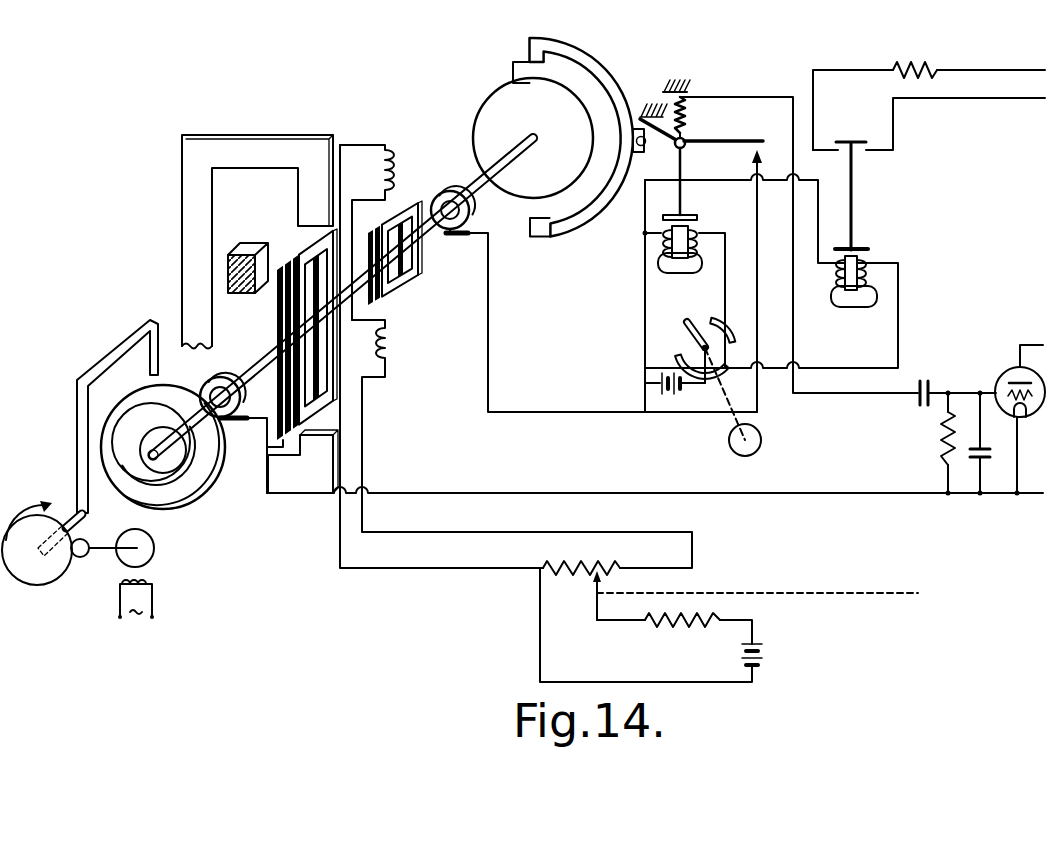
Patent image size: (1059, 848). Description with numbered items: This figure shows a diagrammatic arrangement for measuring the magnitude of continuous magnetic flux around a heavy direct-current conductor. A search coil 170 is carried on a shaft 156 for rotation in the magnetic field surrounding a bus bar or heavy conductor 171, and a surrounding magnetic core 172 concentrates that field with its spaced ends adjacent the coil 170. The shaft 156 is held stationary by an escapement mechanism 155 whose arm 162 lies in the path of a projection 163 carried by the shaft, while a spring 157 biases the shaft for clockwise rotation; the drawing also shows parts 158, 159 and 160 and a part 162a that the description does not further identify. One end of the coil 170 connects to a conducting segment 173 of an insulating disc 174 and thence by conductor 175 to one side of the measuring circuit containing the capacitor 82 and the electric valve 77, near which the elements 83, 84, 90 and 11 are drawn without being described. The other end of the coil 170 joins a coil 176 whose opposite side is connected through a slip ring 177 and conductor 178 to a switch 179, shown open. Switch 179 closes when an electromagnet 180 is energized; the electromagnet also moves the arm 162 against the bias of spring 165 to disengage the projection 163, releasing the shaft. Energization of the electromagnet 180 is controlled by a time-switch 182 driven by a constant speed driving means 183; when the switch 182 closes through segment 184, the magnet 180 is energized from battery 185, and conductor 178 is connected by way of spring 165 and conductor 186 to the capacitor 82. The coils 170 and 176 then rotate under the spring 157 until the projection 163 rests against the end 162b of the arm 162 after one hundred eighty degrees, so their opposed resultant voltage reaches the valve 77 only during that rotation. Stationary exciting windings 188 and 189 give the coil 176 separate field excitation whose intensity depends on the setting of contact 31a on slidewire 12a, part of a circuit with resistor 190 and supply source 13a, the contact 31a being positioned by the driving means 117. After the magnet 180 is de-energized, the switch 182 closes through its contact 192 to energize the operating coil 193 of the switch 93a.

The escapement mechanism 155 is at (546, 119).
The arm 162 is at (596, 64).
The projection 163 is at (513, 67).
The pawl 162a is at (642, 152).
The end of arm 162b is at (543, 245).
The shaft 156 is at (269, 357).
The spring 157 is at (218, 468).
The frame 158 is at (77, 420).
The motor 159 is at (154, 556).
The crank 160 is at (83, 557).
The search coil 170 is at (276, 312).
The bus bar or heavy conductor 171 is at (262, 247).
The magnetic core 172 is at (268, 136).
The conducting segment 173 is at (250, 378).
The disc 174 is at (204, 393).
The conductor 175 is at (422, 494).
The coil 176 is at (420, 269).
The slip ring 177 is at (471, 210).
The conductor 178 is at (594, 413).
The switch 179 is at (755, 142).
The electromagnet 180 is at (699, 226).
The time-switch 182 is at (714, 347).
The constant speed driving means 183 is at (762, 440).
The segment 184 is at (702, 318).
The battery 185 is at (668, 402).
The conductor 186 is at (792, 128).
The stationary exciting winding 188 is at (393, 180).
The stationary exciting winding 189 is at (390, 347).
The resistor 190 is at (690, 628).
The contact 192 is at (676, 358).
The operating coil 193 is at (880, 273).
The spring 165 is at (688, 112).
The resistor 90 is at (934, 64).
The switch 93a is at (856, 150).
The electric valve 77 is at (999, 381).
The capacitor 82 is at (922, 402).
The resistor 83 is at (947, 428).
The capacitor 84 is at (990, 457).
The slidewire 12a is at (610, 566).
The contact 31a is at (592, 581).
The driving means 117 is at (868, 592).
The circuit unit 11 is at (602, 657).
The source of supply 13a is at (762, 650).